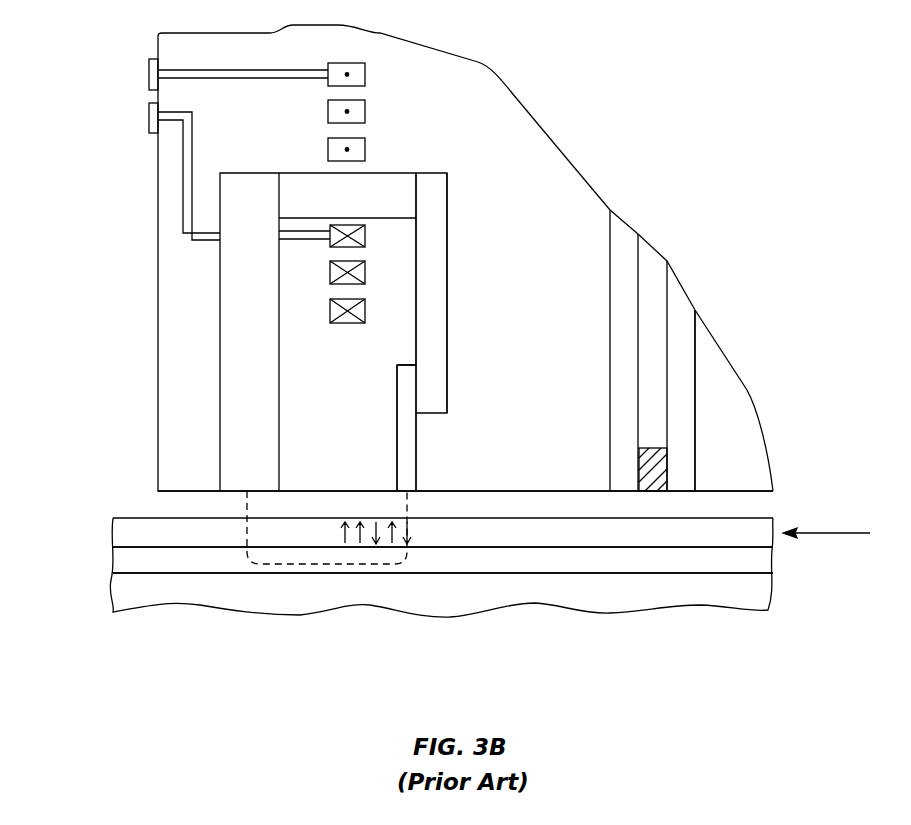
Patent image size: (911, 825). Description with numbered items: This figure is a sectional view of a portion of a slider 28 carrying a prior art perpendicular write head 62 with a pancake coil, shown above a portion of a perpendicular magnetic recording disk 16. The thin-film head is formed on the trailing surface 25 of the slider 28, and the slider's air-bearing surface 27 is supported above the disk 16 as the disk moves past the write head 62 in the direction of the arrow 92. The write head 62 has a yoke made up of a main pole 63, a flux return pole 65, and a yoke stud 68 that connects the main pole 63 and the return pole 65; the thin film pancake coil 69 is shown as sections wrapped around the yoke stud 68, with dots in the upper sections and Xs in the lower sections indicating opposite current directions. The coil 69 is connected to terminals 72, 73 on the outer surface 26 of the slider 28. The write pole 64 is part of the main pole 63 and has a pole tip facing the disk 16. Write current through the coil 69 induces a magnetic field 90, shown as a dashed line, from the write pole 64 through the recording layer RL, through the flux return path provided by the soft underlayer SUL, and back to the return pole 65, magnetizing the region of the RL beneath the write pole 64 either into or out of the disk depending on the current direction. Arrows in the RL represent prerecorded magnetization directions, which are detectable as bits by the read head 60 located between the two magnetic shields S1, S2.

The slider 28 is at (162, 45).
The outer surface 26 is at (157, 242).
The terminal 73 is at (148, 80).
The terminal 72 is at (148, 118).
The pancake coil 69 is at (367, 63).
The flux return pole 65 is at (233, 337).
The yoke stud 68 is at (393, 180).
The main pole 63 is at (438, 337).
The write pole 64 is at (400, 472).
The perpendicular write head 62 is at (495, 173).
The magnetic shield S2 is at (623, 228).
The magnetic shield S1 is at (680, 290).
The trailing surface 25 is at (688, 343).
The read head 60 is at (658, 465).
The air-bearing surface 27 is at (168, 492).
The recording layer RL is at (117, 533).
The soft underlayer SUL is at (115, 562).
The disk 16 is at (115, 595).
The magnetic field 90 is at (248, 575).
The arrow 92 is at (813, 535).